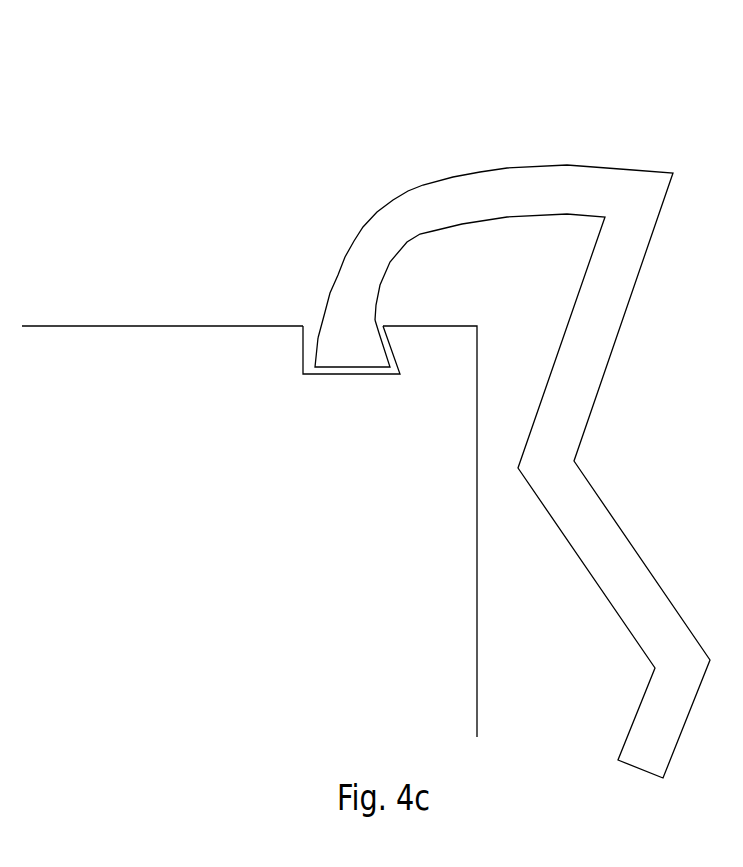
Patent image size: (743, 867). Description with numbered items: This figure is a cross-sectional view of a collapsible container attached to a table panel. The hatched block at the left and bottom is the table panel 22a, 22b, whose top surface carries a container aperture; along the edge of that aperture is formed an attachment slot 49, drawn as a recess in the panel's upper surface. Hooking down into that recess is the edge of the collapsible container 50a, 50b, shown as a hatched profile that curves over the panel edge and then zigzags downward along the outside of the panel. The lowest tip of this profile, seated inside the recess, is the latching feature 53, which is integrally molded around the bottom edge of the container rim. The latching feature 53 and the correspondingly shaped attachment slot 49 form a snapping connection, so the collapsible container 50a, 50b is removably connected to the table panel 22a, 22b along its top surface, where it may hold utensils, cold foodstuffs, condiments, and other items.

The table panel 22a is at (249, 414).
The table panel 22b is at (249, 414).
The attachment slot 49 is at (315, 337).
The first collapsible container 50a is at (512, 394).
The second collapsible container 50b is at (512, 394).
The latching feature 53 is at (385, 355).